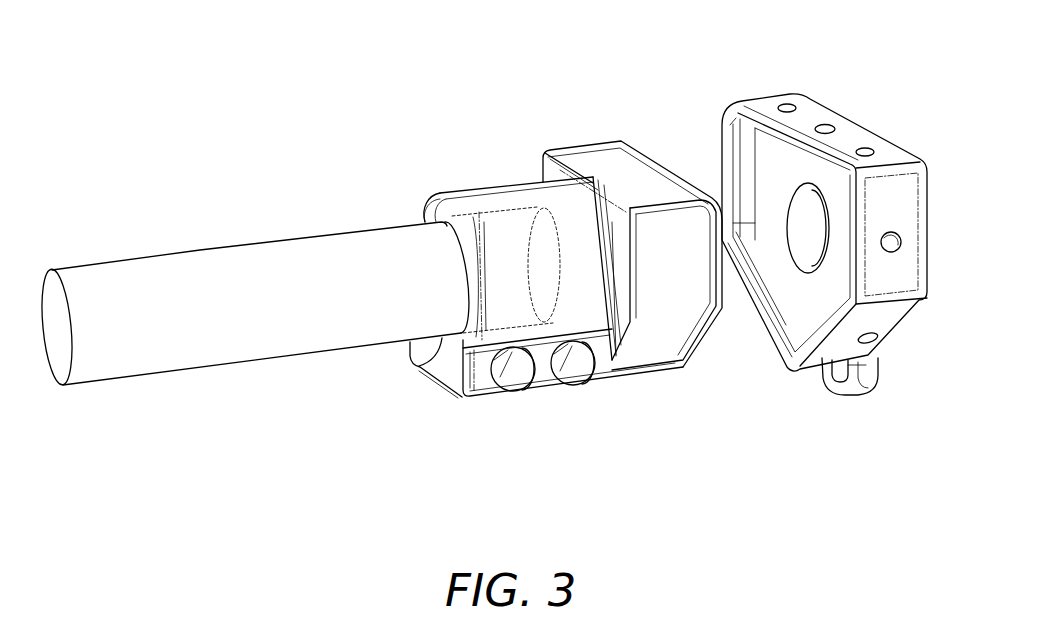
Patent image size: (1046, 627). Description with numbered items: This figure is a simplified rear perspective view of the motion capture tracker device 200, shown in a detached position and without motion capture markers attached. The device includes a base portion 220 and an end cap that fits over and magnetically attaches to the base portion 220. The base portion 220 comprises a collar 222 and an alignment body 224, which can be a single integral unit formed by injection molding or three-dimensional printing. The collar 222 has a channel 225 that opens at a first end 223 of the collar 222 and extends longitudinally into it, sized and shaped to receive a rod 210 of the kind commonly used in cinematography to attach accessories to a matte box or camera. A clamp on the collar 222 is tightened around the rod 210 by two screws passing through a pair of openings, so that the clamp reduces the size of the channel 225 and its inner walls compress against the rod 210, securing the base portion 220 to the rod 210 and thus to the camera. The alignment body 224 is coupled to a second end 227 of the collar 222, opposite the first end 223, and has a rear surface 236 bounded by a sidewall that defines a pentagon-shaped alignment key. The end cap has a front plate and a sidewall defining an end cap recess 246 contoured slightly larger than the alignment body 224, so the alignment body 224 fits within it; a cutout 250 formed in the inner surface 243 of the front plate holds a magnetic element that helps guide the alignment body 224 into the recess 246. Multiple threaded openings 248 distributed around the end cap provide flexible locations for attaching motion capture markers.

The motion capture tracker device 200 is at (257, 108).
The rod 210 is at (262, 319).
The base portion 220 is at (488, 202).
The collar 222 is at (427, 212).
The first end 223 is at (417, 364).
The alignment body 224 is at (588, 142).
The channel 225 is at (502, 273).
The second end 227 is at (612, 222).
The rear surface 236 is at (542, 172).
The inner surface 243 is at (767, 160).
The end cap recess 246 is at (812, 314).
The threaded openings 248 is at (827, 128).
The cutout 250 is at (785, 201).